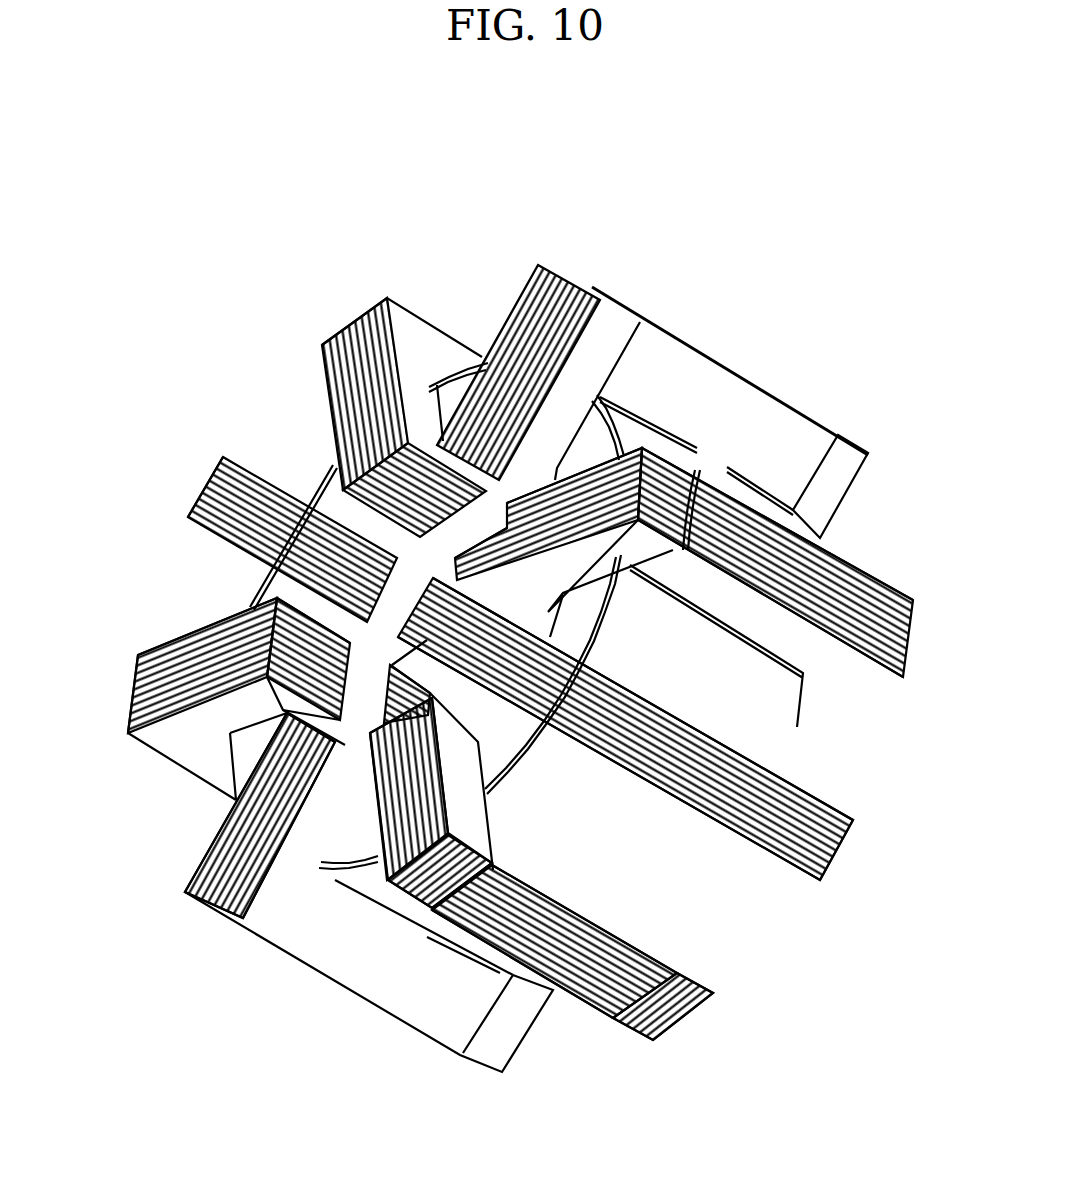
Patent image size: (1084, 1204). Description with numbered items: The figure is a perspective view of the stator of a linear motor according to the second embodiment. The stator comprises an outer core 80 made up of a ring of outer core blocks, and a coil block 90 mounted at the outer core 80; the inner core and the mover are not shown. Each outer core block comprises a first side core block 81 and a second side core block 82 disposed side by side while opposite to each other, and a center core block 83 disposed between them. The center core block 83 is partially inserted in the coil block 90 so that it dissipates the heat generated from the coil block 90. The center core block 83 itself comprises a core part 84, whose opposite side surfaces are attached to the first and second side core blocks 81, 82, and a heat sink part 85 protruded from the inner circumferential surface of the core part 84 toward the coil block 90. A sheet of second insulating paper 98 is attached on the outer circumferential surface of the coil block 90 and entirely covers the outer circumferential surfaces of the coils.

The outer core 80 is at (504, 623).
The first side core block 81 is at (597, 285).
The second side core block 82 is at (742, 370).
The center core block 83 is at (830, 300).
The core part 84 is at (705, 380).
The heat sink part 85 is at (712, 463).
The coil block 90 is at (253, 748).
The second insulating paper 98 is at (745, 677).